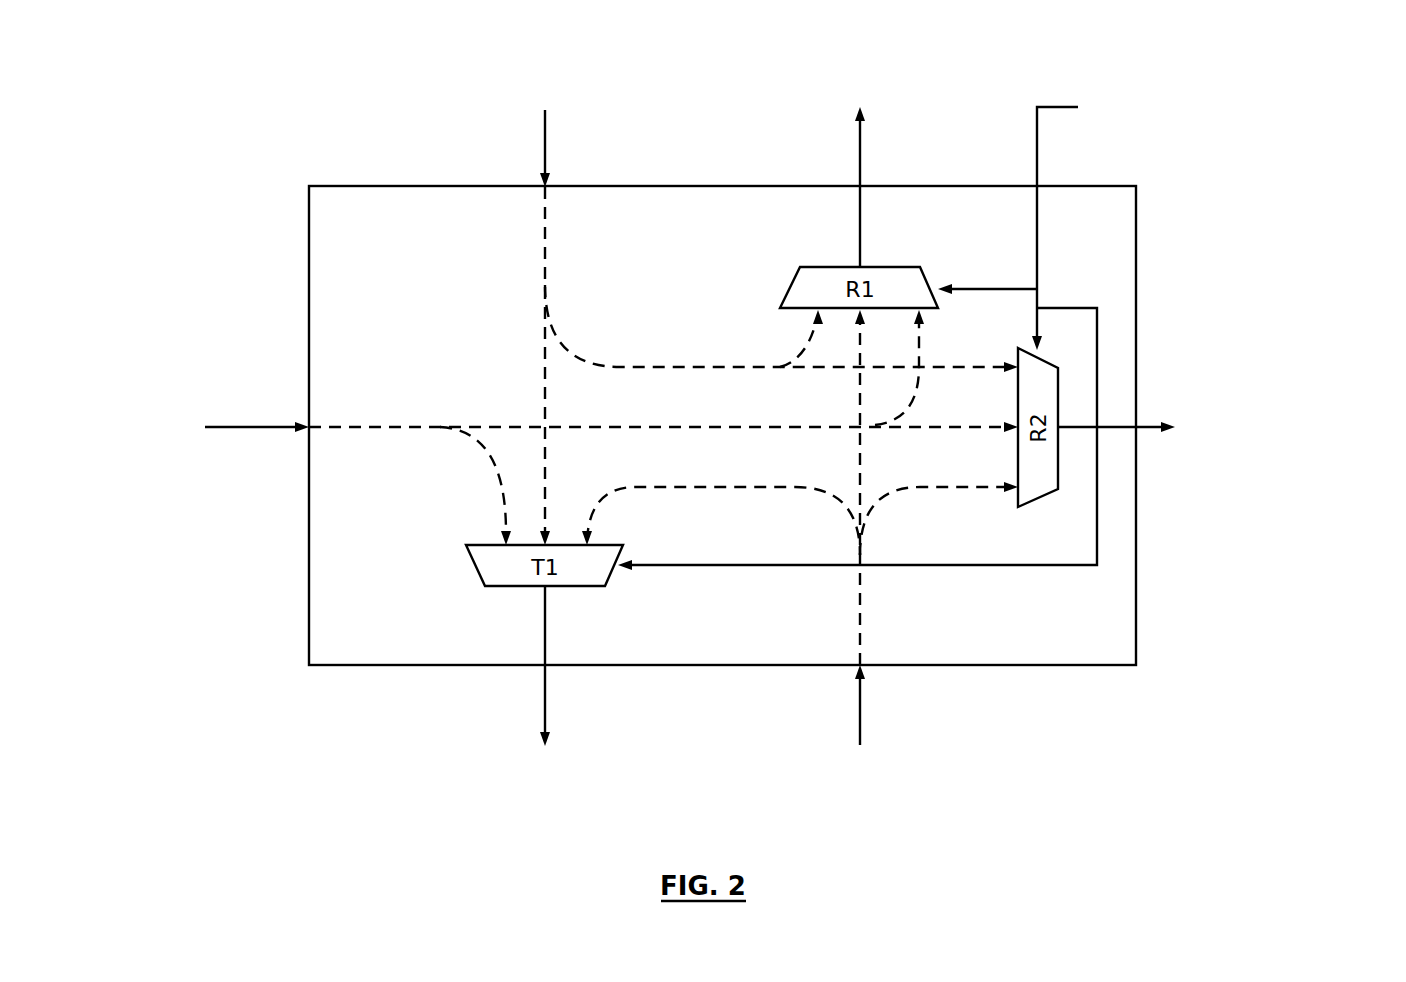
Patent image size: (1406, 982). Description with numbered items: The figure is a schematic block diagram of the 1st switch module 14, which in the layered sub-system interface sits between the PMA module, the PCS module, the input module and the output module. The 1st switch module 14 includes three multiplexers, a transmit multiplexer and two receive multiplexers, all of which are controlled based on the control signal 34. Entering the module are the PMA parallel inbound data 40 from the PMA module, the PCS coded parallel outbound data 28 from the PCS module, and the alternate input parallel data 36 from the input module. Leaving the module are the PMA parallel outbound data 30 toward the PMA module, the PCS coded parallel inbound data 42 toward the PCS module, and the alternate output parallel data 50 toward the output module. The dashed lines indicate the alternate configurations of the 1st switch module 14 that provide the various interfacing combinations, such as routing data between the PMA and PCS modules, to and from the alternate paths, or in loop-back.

The 1st switch module 14 is at (722, 425).
The PMA parallel outbound data 30 is at (736, 291).
The PMA parallel inbound data 40 is at (860, 152).
The control signal 34 is at (943, 333).
The alternate input parallel data 36 is at (519, 427).
The alternate output parallel data 50 is at (1213, 426).
The PCS coded parallel outbound data 28 is at (545, 713).
The PCS coded parallel inbound data 42 is at (800, 575).